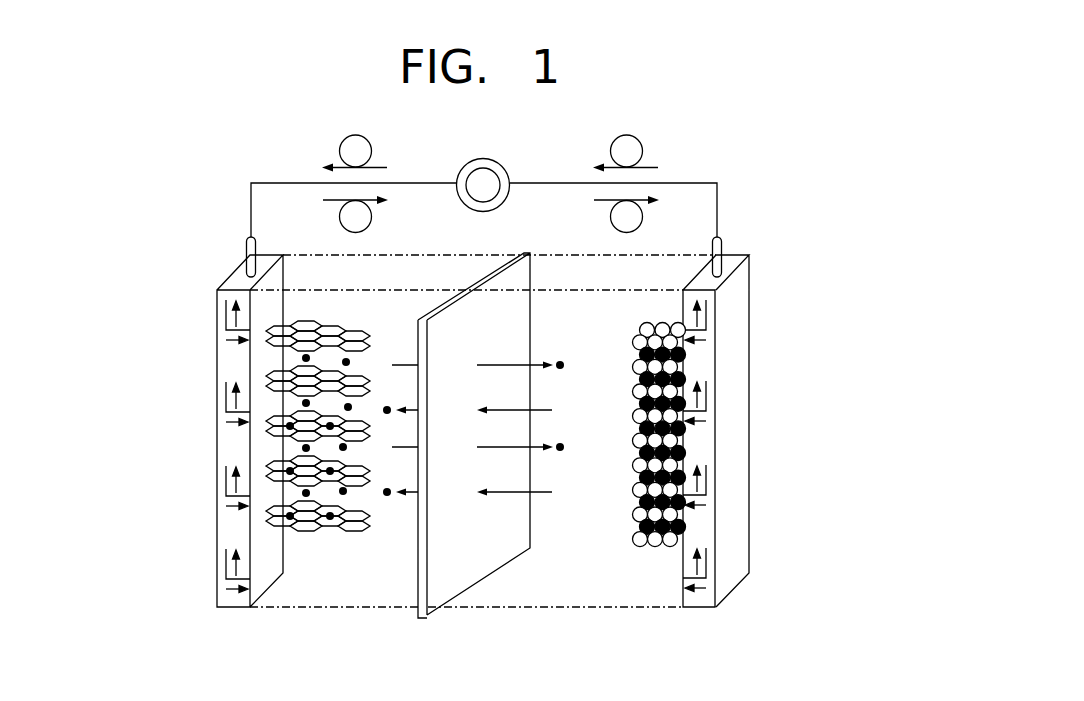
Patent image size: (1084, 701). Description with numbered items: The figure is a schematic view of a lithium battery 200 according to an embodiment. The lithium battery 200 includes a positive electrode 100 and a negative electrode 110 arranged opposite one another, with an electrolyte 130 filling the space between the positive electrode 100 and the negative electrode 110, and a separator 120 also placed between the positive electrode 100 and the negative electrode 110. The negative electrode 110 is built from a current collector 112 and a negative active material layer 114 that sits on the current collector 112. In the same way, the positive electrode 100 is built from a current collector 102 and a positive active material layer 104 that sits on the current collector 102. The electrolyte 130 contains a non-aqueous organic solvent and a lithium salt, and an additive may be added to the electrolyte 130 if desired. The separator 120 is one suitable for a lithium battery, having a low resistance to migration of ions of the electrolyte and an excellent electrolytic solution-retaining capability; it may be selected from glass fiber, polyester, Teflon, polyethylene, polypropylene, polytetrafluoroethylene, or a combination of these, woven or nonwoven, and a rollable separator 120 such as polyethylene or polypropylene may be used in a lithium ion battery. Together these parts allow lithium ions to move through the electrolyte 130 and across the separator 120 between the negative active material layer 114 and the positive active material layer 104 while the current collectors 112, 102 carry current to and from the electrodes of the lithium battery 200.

The positive electrode 100 is at (483, 461).
The current collector 102 is at (742, 402).
The positive active material layer 104 is at (690, 455).
The negative electrode 110 is at (227, 431).
The current collector 112 is at (227, 373).
The negative active material layer 114 is at (280, 430).
The separator 120 is at (479, 590).
The electrolyte 130 is at (380, 598).
The lithium battery 200 is at (753, 184).